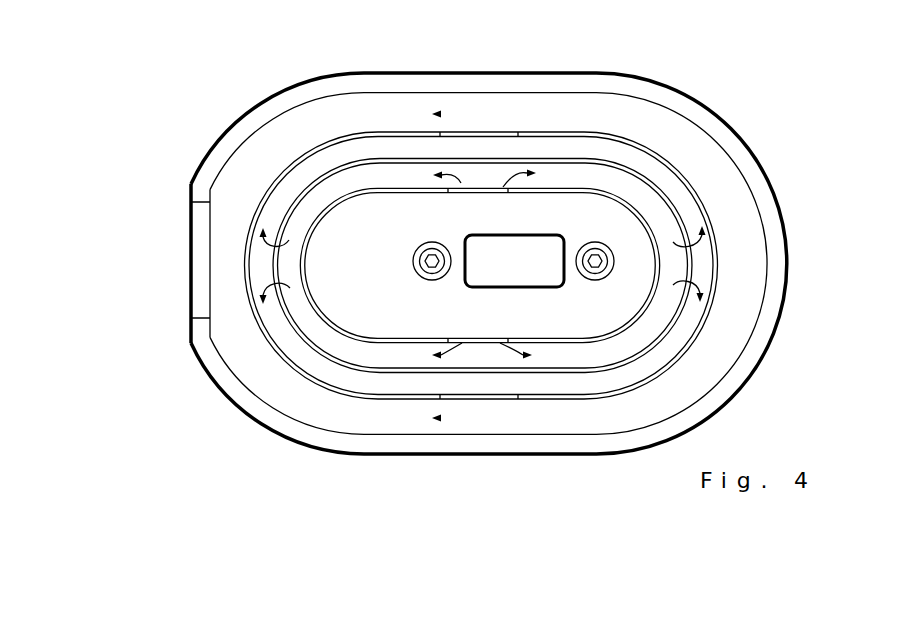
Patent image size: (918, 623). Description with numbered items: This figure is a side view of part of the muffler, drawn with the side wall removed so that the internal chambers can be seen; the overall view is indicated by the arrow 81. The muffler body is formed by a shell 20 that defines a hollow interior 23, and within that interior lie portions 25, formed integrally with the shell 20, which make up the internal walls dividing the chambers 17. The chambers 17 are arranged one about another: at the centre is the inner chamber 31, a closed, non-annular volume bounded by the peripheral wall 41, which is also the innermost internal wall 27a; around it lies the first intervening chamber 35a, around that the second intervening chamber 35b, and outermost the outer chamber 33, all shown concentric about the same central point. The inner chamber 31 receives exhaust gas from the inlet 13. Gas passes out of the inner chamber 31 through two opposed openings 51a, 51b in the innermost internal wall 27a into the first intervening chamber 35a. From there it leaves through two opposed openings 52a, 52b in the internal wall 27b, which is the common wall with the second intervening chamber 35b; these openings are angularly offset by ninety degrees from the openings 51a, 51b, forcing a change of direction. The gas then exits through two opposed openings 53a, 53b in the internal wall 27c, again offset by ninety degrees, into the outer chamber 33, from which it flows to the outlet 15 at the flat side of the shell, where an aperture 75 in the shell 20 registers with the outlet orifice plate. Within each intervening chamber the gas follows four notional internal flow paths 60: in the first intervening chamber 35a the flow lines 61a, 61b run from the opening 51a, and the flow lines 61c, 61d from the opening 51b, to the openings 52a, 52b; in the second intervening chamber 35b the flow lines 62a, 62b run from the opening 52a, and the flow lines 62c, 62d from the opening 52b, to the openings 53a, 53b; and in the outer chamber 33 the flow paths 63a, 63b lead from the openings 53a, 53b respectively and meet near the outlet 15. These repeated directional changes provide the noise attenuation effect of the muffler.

The sealing unit assembly 81 is at (104, 127).
The shell 20 is at (695, 98).
The hollow interior 23 is at (713, 150).
The outlet 15 is at (191, 257).
The aperture 75 is at (210, 278).
The internal flow paths 60 is at (522, 134).
The opening 52a is at (243, 270).
The opening 52b is at (688, 266).
The innermost internal wall 27a is at (310, 347).
The internal wall 27b is at (285, 385).
The internal wall 27c is at (263, 417).
The first intervening chamber 35a is at (303, 188).
The second intervening chamber 35b is at (262, 190).
The outer chamber 33 is at (305, 123).
The inner chamber 31 is at (367, 202).
The chambers 17 is at (740, 363).
The portions 25 is at (723, 347).
The inlet 13 is at (483, 258).
The peripheral wall 41 is at (587, 345).
The flow path 61a is at (470, 207).
The flow path 61b is at (517, 196).
The flow path 61c is at (473, 345).
The flow path 61d is at (520, 345).
The flow path 62a is at (289, 240).
The flow path 62b is at (290, 288).
The flow path 62c is at (673, 242).
The flow path 62d is at (673, 285).
The flow path 63a is at (441, 115).
The flow path 63b is at (441, 418).
The opening 51a is at (490, 205).
The opening 51b is at (490, 350).
The opening 53a is at (477, 207).
The opening 53b is at (470, 365).